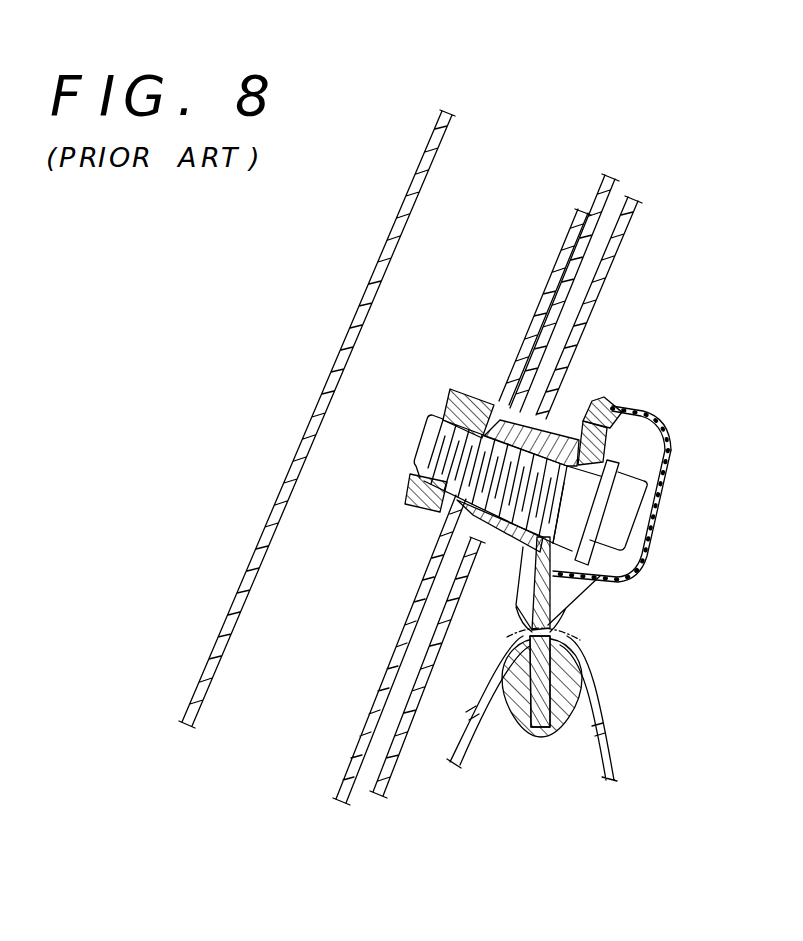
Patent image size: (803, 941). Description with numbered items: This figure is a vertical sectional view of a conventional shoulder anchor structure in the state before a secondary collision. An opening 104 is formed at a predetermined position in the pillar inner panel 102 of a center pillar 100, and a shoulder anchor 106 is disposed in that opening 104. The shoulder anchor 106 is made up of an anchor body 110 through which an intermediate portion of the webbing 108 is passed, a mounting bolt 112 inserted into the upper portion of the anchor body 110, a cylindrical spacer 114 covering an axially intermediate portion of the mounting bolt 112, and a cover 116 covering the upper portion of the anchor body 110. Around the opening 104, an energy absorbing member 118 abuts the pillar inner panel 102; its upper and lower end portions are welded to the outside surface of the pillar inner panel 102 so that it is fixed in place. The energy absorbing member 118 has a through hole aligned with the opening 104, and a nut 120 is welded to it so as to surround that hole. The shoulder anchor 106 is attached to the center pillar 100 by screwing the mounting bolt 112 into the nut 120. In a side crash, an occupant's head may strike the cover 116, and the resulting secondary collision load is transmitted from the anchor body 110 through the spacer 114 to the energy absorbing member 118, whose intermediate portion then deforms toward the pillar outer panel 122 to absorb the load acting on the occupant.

The center pillar 100 is at (536, 23).
The pillar inner panel 102 is at (574, 72).
The opening 104 is at (622, 333).
The shoulder anchor 106 is at (726, 362).
The webbing 108 is at (638, 696).
The anchor body 110 is at (702, 430).
The mounting bolt 112 is at (700, 530).
The cylindrical spacer 114 is at (446, 317).
The cover 116 is at (702, 482).
The energy absorbing member 118 is at (332, 612).
The nut 120 is at (350, 517).
The pillar outer panel 122 is at (488, 72).